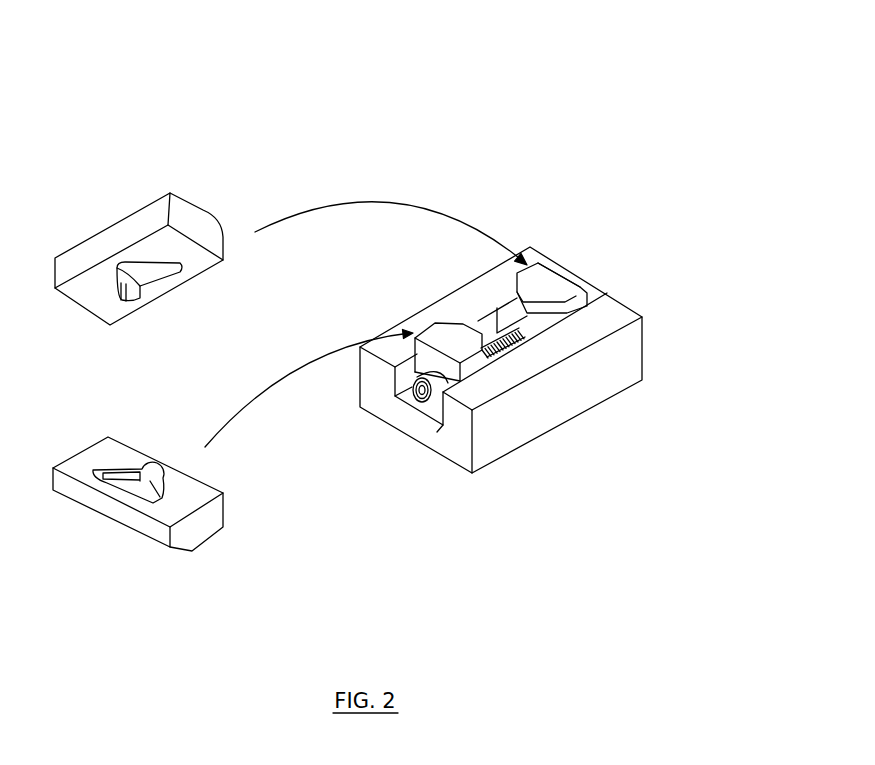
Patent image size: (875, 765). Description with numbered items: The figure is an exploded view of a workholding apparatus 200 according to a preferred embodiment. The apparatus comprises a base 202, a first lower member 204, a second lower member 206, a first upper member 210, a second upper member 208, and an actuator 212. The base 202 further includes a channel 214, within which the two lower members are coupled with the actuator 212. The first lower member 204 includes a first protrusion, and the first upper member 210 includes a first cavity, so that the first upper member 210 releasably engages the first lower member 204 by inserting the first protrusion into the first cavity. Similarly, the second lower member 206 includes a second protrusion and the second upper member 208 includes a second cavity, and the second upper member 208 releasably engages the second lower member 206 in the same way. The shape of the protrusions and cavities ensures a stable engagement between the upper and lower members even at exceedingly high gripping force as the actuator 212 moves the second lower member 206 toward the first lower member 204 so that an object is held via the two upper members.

The workholding apparatus 200 is at (713, 173).
The base 202 is at (610, 374).
The first lower member 204 is at (465, 334).
The second lower member 206 is at (560, 276).
The second upper member 208 is at (188, 216).
The first upper member 210 is at (125, 460).
The actuator 212 is at (420, 396).
The channel 214 is at (590, 283).